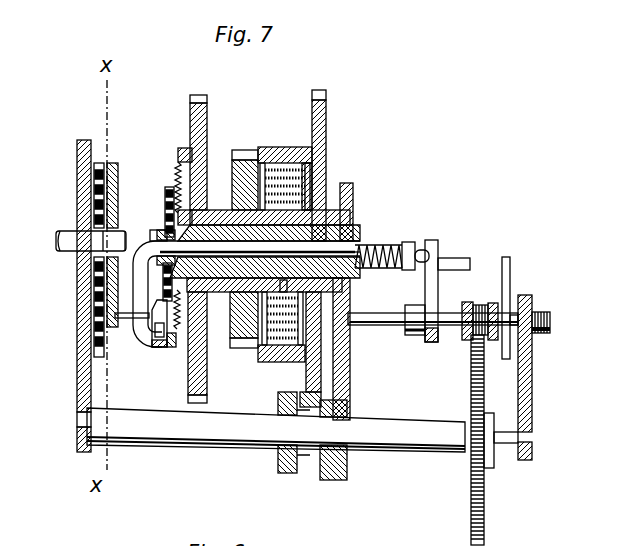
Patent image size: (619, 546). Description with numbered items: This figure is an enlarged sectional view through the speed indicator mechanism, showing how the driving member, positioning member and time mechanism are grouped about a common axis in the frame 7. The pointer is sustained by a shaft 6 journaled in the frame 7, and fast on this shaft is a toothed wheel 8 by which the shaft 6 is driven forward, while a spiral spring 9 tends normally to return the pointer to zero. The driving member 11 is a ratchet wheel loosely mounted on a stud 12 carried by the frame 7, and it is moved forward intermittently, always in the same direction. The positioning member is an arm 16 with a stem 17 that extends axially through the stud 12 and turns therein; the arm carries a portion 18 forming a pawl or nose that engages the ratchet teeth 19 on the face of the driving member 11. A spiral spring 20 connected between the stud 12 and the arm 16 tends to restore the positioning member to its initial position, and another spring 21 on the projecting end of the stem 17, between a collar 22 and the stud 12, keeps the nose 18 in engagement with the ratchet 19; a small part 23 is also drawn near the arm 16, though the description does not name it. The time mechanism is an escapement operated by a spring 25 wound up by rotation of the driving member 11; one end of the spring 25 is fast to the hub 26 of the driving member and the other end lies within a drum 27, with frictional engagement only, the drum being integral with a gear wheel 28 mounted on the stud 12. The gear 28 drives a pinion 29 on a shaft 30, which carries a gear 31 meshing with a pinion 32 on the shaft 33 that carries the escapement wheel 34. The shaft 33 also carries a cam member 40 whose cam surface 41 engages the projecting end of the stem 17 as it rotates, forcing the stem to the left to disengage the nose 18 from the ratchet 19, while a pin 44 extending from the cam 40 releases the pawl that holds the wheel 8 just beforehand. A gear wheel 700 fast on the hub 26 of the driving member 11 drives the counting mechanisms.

The shaft 6 is at (66, 238).
The frame 7 is at (77, 327).
The toothed wheel 8 is at (118, 165).
The spiral spring 9 is at (78, 268).
The driving member 11 is at (210, 97).
The stud 12 is at (250, 160).
The arm 16 is at (138, 288).
The stem 17 is at (325, 198).
The pawl or nose 18 is at (160, 352).
The ratchet teeth 19 is at (177, 152).
The spiral spring 20 is at (170, 184).
The spring 21 is at (375, 247).
The collar 22 is at (407, 239).
The pin 23 is at (120, 321).
The spring 25 is at (328, 153).
The hub 26 is at (357, 218).
The barrel or drum 27 is at (283, 167).
The gear wheel 28 is at (327, 92).
The pinion 29 is at (303, 474).
The shaft 30 is at (433, 453).
The gear 31 is at (484, 488).
The pinion 32 is at (492, 302).
The shaft 33 is at (457, 327).
The escapement wheel 34 is at (508, 285).
The cam member 40 is at (437, 292).
The cam surface 41 is at (440, 240).
The pin 44 is at (448, 260).
The gear wheel 700 is at (247, 349).